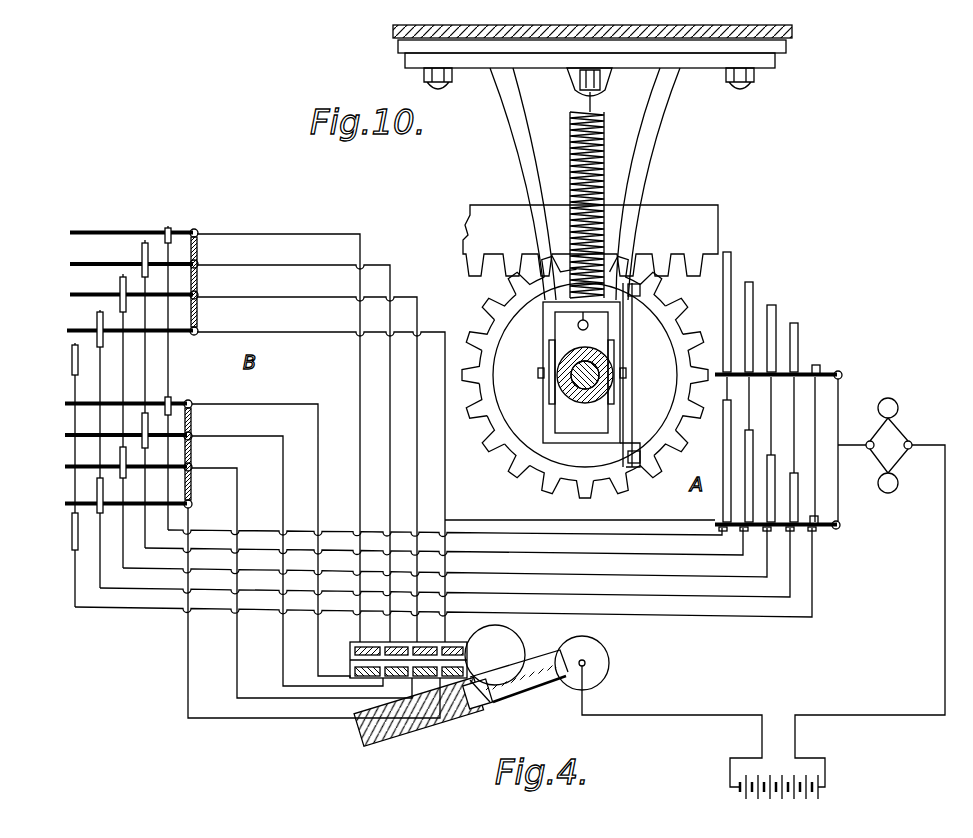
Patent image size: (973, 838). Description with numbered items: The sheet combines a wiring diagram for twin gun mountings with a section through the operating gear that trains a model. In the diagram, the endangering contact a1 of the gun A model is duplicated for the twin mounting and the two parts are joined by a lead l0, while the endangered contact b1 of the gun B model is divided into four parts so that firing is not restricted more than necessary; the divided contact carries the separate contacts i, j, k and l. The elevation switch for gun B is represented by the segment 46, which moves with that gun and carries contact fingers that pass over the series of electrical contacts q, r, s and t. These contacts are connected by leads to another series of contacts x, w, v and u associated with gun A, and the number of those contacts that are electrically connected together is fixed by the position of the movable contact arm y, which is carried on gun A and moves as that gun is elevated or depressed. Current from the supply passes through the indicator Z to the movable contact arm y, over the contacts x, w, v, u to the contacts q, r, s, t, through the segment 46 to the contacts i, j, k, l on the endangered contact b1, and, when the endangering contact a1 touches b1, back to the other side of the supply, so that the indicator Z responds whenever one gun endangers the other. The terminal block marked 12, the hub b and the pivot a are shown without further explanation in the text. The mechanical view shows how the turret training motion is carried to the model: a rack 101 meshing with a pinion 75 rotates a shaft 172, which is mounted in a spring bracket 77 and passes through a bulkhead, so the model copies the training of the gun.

In FIG. 10, the rack 101 is at (681, 218).
In FIG. 10, the pinion 75 is at (553, 478).
In FIG. 10, the spring bracket 77 is at (592, 338).
In FIG. 10, the shaft 172 is at (560, 380).
In FIG. 4, the segment 46 is at (116, 368).
In FIG. 4, the electrical contact q is at (172, 228).
In FIG. 4, the electrical contact r is at (146, 242).
In FIG. 4, the electrical contact s is at (120, 280).
In FIG. 4, the electrical contact t is at (97, 320).
In FIG. 4, the contact i is at (361, 646).
In FIG. 4, the contact j is at (392, 646).
In FIG. 4, the contact k is at (403, 663).
In FIG. 4, the endangered contact b1 is at (409, 649).
In FIG. 4, the endangering contact a1 is at (455, 705).
In FIG. 4, the lever hub b is at (495, 655).
In FIG. 4, the contact l is at (478, 645).
In FIG. 4, the lead l0 is at (540, 702).
In FIG. 4, the pivot a is at (658, 711).
In FIG. 4, the indicator Z is at (875, 445).
In FIG. 4, the terminal block 12 is at (778, 450).
In FIG. 4, the contact x is at (731, 252).
In FIG. 4, the contact w is at (752, 283).
In FIG. 4, the contact v is at (776, 306).
In FIG. 4, the contact u is at (799, 326).
In FIG. 4, the movable contact arm y is at (828, 373).